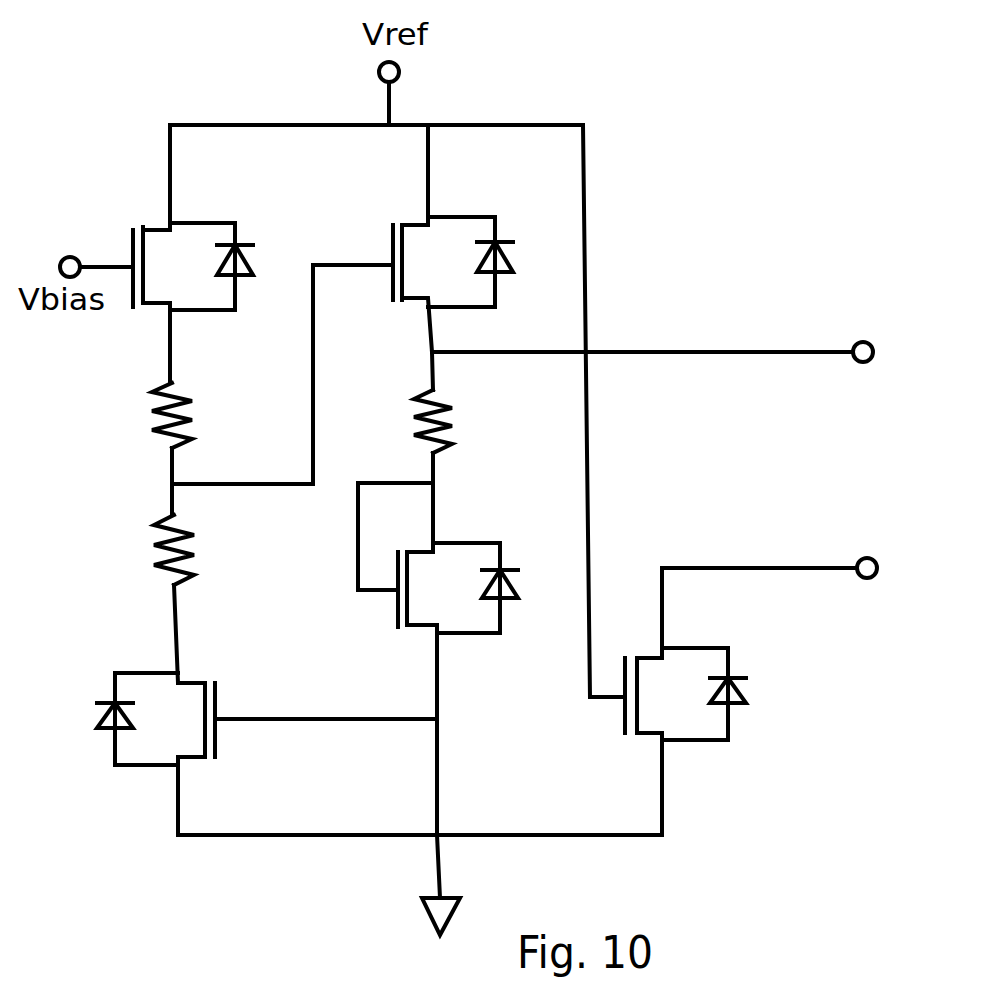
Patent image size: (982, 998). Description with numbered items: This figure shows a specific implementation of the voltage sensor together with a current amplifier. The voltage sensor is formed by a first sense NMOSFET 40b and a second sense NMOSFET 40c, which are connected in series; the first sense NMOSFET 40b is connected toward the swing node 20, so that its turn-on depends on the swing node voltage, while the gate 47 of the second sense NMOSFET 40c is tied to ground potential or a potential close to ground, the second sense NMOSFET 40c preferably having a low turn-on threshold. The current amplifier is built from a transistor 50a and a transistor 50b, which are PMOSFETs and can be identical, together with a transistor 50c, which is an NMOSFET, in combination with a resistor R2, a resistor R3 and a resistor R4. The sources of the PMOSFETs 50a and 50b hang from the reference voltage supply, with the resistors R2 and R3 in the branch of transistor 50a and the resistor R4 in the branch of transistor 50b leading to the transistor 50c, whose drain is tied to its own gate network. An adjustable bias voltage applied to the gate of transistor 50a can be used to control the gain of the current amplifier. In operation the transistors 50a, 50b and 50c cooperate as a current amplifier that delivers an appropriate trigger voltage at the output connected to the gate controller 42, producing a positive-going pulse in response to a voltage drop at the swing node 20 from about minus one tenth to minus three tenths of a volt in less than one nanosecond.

The transistor 50a is at (193, 254).
The transistor 50b is at (453, 238).
The transistor 50c is at (438, 644).
The first sense NMOSFET 40b is at (664, 480).
The second sense NMOSFET 40c is at (156, 737).
The gate 47 is at (247, 718).
The gate controller 42 is at (652, 292).
The swing node 20 is at (769, 509).
The resistor R2 is at (147, 415).
The resistor R3 is at (148, 550).
The resistor R4 is at (458, 402).